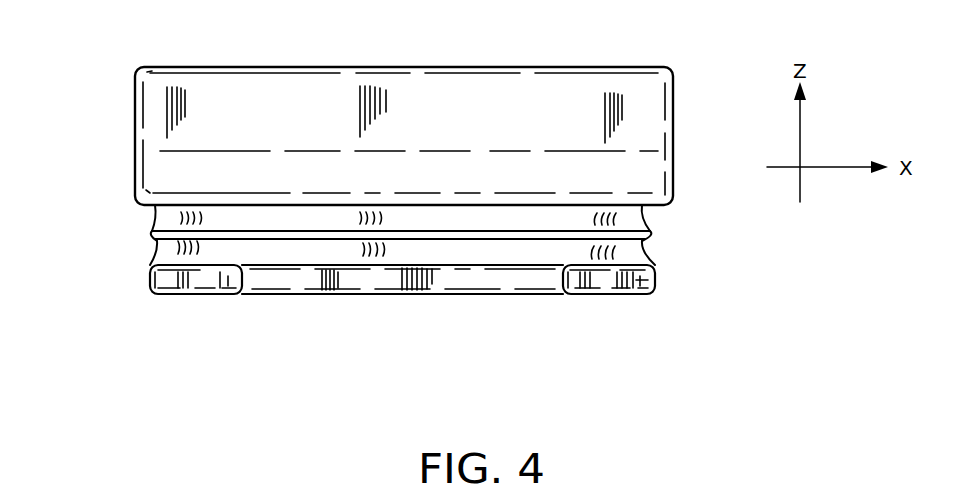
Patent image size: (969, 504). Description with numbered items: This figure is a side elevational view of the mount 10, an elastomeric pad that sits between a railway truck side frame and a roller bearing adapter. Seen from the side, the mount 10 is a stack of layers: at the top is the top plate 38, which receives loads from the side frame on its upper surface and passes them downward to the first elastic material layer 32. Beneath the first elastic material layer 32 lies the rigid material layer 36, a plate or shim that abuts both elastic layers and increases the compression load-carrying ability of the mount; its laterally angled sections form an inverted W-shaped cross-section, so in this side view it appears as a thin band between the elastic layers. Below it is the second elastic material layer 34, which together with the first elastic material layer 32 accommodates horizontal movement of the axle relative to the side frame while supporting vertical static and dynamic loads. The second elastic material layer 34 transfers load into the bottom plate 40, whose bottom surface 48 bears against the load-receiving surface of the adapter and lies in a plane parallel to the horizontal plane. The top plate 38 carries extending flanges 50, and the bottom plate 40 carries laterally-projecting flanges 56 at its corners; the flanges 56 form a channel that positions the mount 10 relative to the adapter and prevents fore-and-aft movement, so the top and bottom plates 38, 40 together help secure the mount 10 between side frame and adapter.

The mount 10 is at (119, 49).
The first elastic material layer 32 is at (168, 217).
The second elastic material layer 34 is at (170, 250).
The rigid material layer 36 is at (660, 242).
The top plate 38 is at (157, 172).
The bottom plate 40 is at (513, 283).
The bottom surface 48 is at (623, 302).
The extending flanges 50 is at (650, 118).
The laterally-projecting flanges 56 is at (192, 278).